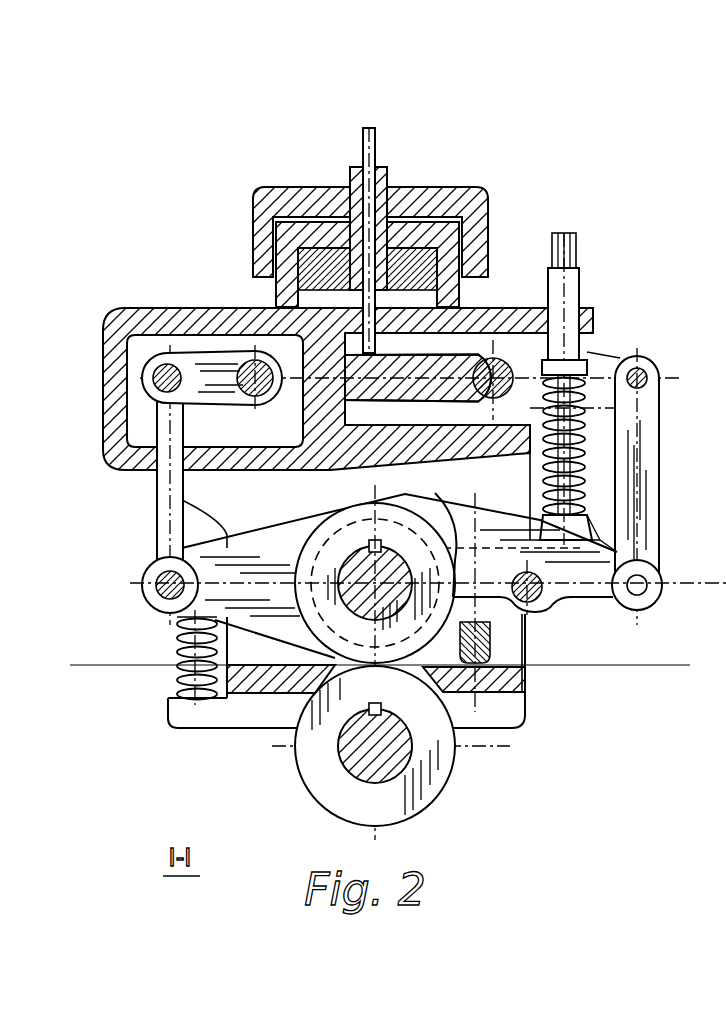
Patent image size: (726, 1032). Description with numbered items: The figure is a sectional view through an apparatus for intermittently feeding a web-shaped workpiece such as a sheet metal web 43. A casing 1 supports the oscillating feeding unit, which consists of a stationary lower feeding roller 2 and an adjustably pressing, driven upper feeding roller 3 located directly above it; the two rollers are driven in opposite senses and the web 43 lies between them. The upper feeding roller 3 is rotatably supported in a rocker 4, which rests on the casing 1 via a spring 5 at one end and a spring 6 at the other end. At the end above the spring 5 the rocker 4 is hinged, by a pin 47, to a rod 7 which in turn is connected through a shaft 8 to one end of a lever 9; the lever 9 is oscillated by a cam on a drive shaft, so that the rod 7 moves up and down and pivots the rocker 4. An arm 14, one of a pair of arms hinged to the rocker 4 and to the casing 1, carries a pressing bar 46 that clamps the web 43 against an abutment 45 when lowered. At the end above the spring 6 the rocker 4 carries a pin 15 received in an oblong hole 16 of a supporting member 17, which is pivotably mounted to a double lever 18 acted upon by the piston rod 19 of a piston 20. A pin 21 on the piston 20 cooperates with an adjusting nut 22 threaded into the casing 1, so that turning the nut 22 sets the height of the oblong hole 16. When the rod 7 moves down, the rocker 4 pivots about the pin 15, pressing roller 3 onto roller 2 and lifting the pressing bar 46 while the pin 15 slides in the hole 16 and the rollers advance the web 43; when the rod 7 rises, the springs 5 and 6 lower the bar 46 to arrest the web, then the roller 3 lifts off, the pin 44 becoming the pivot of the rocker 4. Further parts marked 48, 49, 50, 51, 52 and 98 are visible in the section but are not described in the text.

The casing 1 is at (522, 320).
The lower feeding roller 2 is at (420, 792).
The upper feeding roller 3 is at (445, 640).
The rocker 4 is at (588, 567).
The spring 5 is at (170, 689).
The spring 6 is at (587, 455).
The rod 7 is at (162, 508).
The shaft 8 is at (178, 372).
The lever 9 is at (215, 363).
The arm 14 is at (522, 636).
The pin 15 is at (653, 580).
The oblong hole 16 is at (657, 552).
The supporting member 17 is at (647, 497).
The double lever 18 is at (603, 367).
The piston rod 19 is at (397, 308).
The piston 20 is at (413, 253).
The pin 21 is at (390, 190).
The adjusting nut 22 is at (470, 197).
The sheet metal web 43 is at (670, 667).
The pin 44 is at (157, 603).
The abutment 45 is at (510, 730).
The pressing bar 46 is at (528, 685).
The pin 47 is at (160, 582).
The support 48 is at (262, 695).
The support 49 is at (232, 713).
The spring seat 50 is at (480, 517).
The block 51 is at (503, 697).
The pin 52 is at (540, 607).
The plate 98 is at (452, 525).